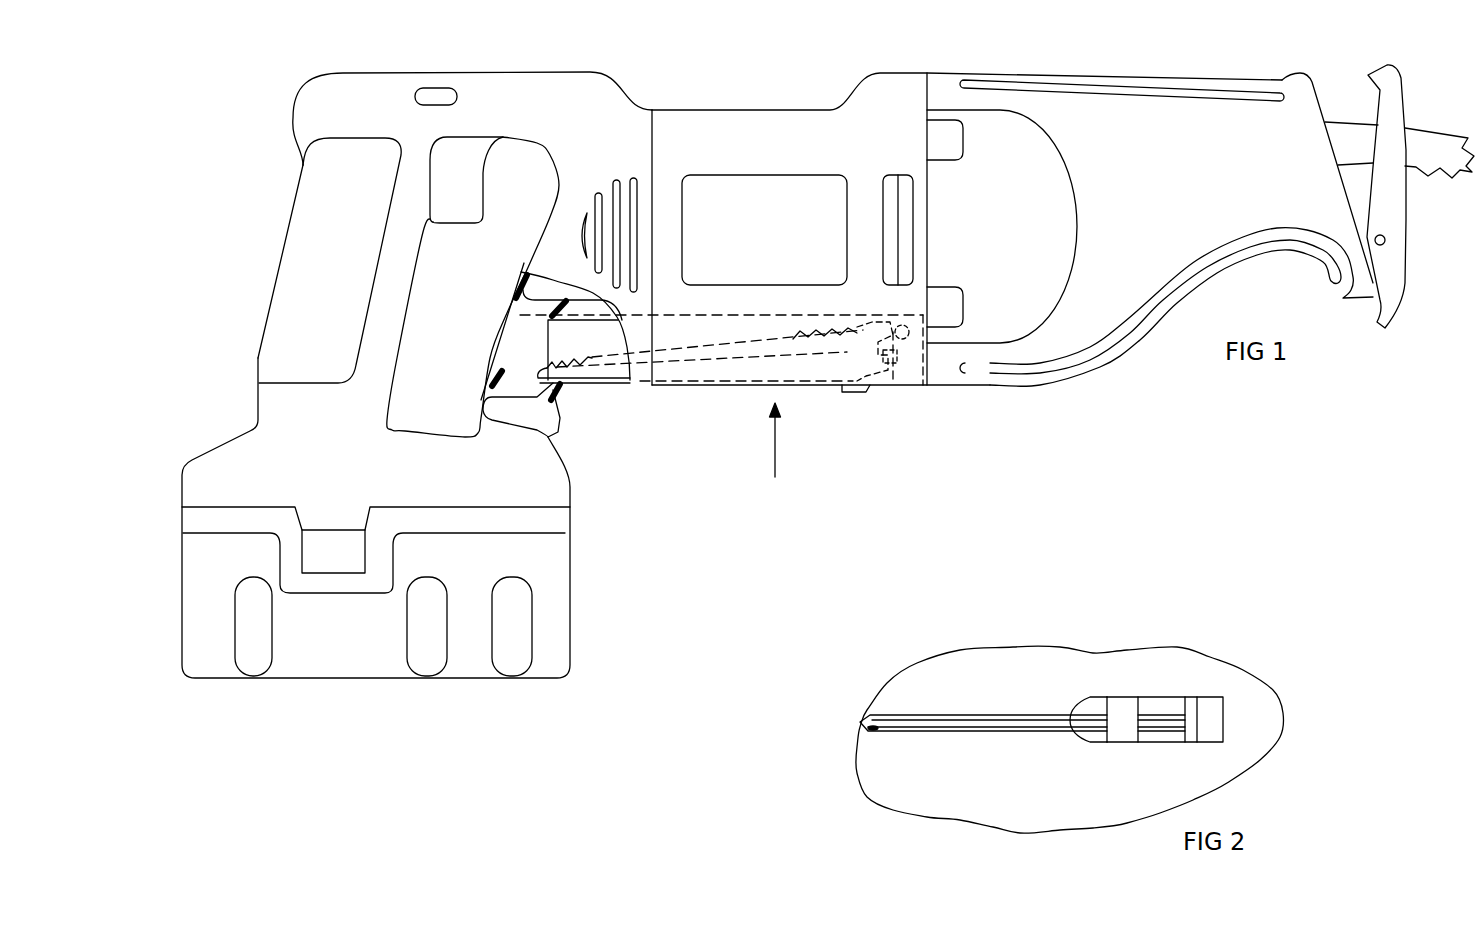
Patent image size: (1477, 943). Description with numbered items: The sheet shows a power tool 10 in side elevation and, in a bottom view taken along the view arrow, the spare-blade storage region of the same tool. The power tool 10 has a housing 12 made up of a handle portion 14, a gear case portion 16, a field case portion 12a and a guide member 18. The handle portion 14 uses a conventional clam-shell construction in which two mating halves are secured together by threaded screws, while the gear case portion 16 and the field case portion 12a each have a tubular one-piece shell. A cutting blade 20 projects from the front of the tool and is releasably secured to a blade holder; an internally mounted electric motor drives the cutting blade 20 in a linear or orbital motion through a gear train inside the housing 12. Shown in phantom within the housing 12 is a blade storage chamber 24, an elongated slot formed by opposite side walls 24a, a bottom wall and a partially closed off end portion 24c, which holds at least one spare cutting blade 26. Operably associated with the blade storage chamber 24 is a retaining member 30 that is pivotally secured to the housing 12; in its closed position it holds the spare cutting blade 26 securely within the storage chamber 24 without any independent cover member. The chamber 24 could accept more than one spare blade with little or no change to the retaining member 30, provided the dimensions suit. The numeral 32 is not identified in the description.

In FIG. 1, the power tool 10 is at (282, 80).
In FIG. 1, the housing 12 is at (709, 100).
In FIG. 1, the field case portion 12a is at (763, 133).
In FIG. 2, the field case portion 12a is at (920, 792).
In FIG. 1, the handle portion 14 is at (293, 258).
In FIG. 1, the gear case portion 16 is at (1027, 345).
In FIG. 1, the guide member 18 is at (1393, 215).
In FIG. 1, the cutting blade 20 is at (1430, 142).
In FIG. 1, the blade storage chamber 24 is at (703, 313).
In FIG. 2, the blade storage chamber 24 is at (852, 704).
In FIG. 2, the side walls 24a is at (937, 717).
In FIG. 1, the end portion 24c is at (560, 377).
In FIG. 1, the spare cutting blade 26 is at (712, 383).
In FIG. 2, the spare cutting blade 26 is at (960, 720).
In FIG. 1, the retaining member 30 is at (872, 398).
In FIG. 2, the retaining member 30 is at (1224, 694).
In FIG. 1, the storage compartment 32 is at (558, 332).